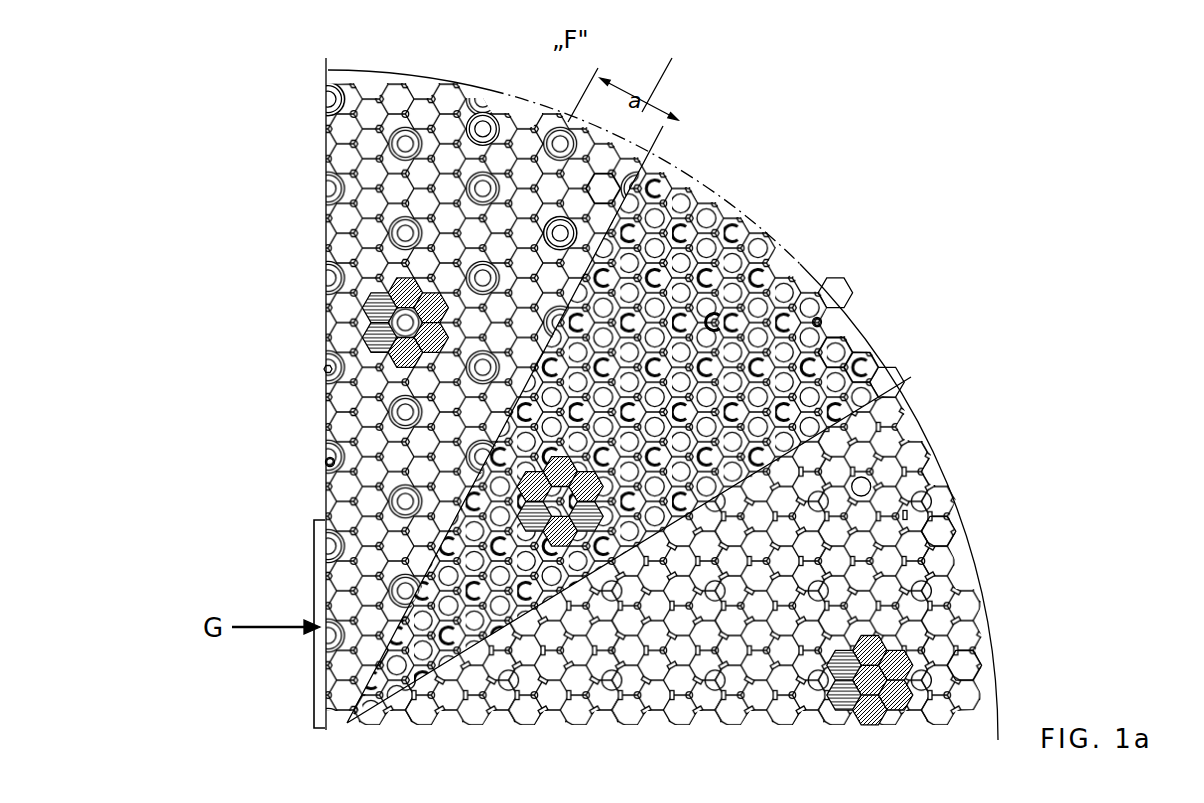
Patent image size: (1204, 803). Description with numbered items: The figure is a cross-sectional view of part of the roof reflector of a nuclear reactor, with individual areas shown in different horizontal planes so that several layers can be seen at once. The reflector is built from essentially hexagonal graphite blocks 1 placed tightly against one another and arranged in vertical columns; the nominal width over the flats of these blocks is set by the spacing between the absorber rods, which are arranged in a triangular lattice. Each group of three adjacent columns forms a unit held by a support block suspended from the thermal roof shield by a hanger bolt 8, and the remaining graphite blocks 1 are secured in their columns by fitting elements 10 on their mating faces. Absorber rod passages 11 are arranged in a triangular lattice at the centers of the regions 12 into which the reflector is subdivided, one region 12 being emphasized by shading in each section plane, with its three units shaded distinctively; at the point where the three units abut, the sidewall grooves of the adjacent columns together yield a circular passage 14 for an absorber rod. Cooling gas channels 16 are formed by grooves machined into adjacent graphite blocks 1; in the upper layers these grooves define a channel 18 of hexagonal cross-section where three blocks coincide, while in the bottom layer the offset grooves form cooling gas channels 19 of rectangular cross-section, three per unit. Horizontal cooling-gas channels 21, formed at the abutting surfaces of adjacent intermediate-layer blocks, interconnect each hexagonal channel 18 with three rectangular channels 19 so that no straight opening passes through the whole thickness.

The graphite block 1 is at (642, 122).
The hanger bolt 8 is at (975, 648).
The fitting element 10 is at (897, 393).
The passage 11 is at (560, 234).
The region 12 is at (872, 652).
The circular passage 14 is at (866, 492).
The cooling gas channel 16 is at (330, 462).
The hexagonal channel 18 is at (620, 406).
The rectangular cooling gas channel 19 is at (975, 522).
The horizontal cooling-gas channel 21 is at (905, 515).